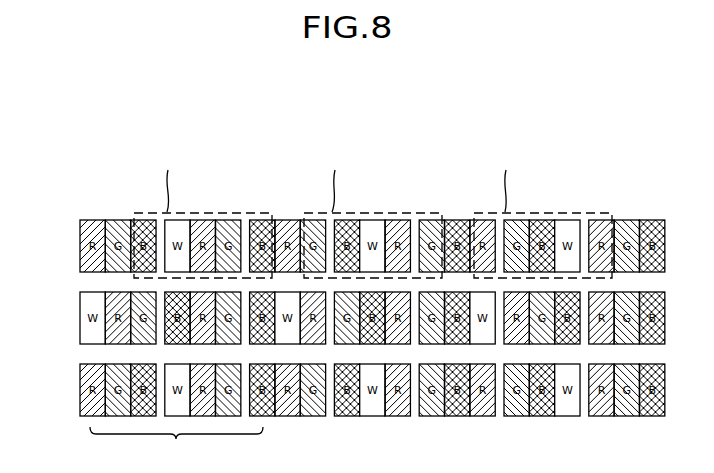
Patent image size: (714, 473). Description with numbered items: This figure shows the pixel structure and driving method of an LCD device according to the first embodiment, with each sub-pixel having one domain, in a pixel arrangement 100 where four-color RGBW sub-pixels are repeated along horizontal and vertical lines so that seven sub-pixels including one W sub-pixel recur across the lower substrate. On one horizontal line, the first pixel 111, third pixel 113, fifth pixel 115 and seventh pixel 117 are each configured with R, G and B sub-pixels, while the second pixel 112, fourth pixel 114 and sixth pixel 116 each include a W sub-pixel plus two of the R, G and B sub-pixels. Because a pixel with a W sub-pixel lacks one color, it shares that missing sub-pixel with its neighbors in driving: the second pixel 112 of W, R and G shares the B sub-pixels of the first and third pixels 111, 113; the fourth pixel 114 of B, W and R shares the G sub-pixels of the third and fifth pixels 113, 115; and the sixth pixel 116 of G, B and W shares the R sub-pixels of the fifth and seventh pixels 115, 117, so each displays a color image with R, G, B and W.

The display panel pixel arrangement 100 is at (386, 120).
The first pixel 111 is at (80, 212).
The second pixel 112 is at (241, 212).
The third pixel 113 is at (326, 212).
The fourth pixel 114 is at (334, 212).
The fifth pixel 115 is at (419, 212).
The sixth pixel 116 is at (504, 212).
The seventh pixel 117 is at (665, 212).